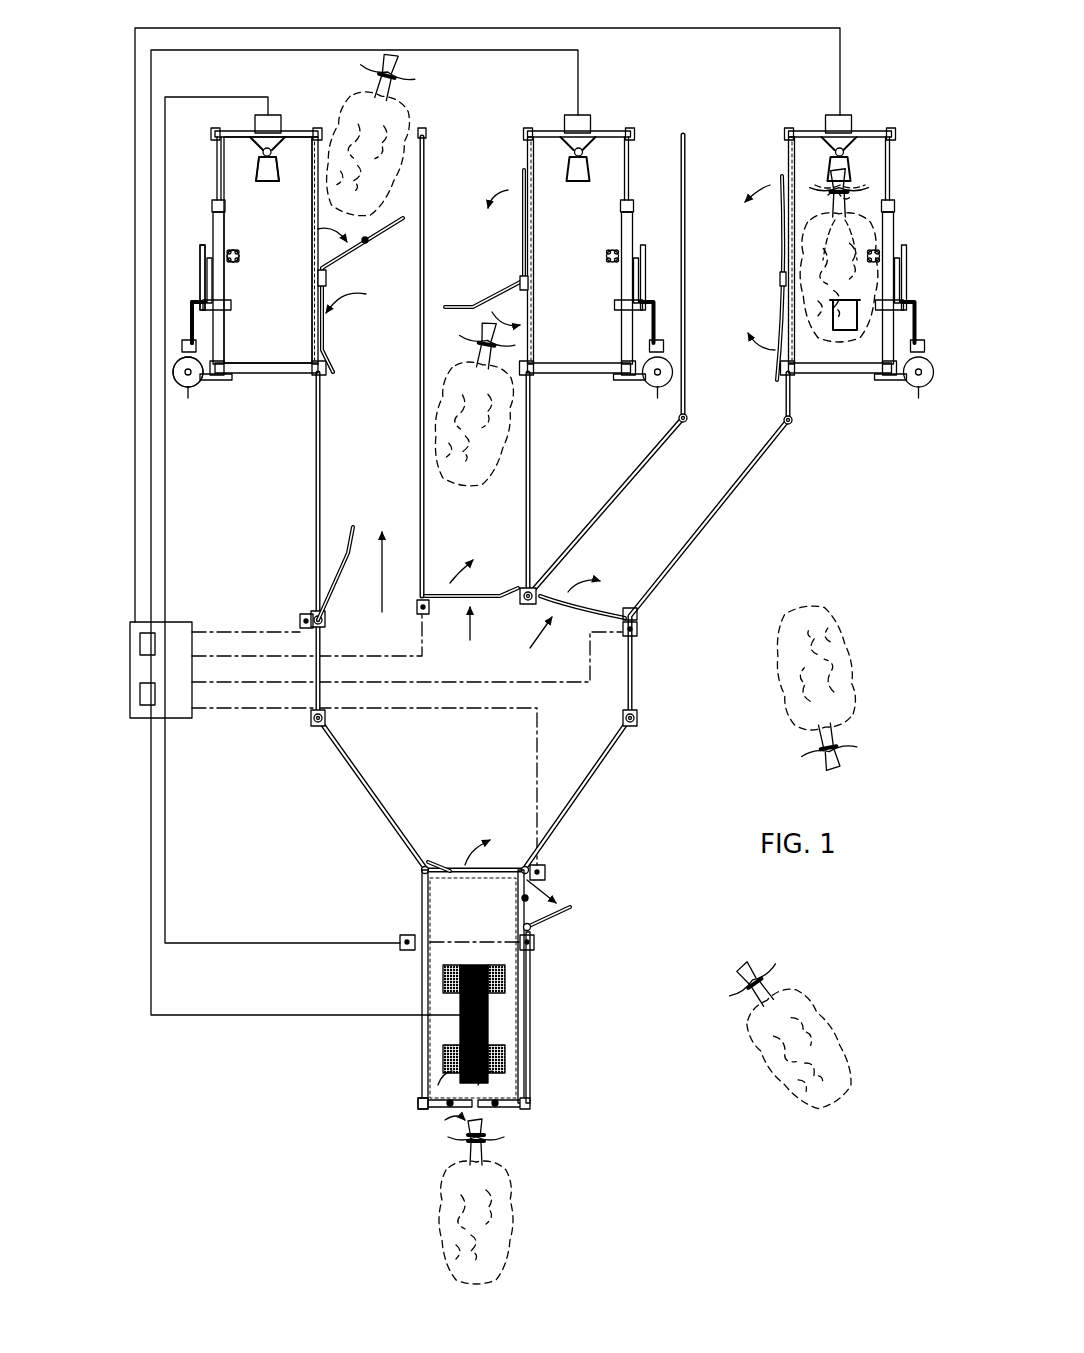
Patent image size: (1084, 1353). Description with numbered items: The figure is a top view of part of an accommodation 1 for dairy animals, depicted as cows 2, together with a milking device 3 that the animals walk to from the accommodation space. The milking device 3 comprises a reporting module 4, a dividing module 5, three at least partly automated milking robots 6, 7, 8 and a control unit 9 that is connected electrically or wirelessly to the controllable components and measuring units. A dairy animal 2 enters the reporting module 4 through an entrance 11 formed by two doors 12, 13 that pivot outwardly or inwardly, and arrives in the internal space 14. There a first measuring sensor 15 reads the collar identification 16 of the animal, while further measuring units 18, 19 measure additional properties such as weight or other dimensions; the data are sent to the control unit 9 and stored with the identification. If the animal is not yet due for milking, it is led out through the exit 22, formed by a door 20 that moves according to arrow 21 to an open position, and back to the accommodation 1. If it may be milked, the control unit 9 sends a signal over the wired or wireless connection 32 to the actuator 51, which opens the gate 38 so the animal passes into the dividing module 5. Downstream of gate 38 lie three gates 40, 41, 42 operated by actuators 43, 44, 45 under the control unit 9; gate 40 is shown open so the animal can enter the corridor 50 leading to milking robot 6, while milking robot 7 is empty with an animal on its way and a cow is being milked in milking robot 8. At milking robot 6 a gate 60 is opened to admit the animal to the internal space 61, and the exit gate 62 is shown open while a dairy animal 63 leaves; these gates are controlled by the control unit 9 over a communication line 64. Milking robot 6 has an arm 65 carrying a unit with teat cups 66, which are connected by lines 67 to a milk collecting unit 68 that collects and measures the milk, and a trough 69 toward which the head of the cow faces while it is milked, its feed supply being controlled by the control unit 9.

The accommodation for dairy animals 1 is at (787, 557).
The dairy animal 2 is at (822, 992).
The milking device 3 is at (250, 1062).
The reporting module 4 is at (534, 997).
The dividing module 5 is at (612, 764).
The milking robot 6 is at (262, 373).
The milking robot 7 is at (578, 373).
The milking robot 8 is at (840, 373).
The control unit 9 is at (127, 728).
The entrance 11 is at (442, 1112).
The door 12 is at (423, 1090).
The door 13 is at (497, 1104).
The internal space 14 is at (496, 1022).
The first measuring sensor 15 is at (534, 950).
The collar identification 16 is at (480, 1138).
The measuring unit 18 is at (408, 935).
The measuring sensor 19 is at (460, 1006).
The door 20 is at (535, 940).
The arrow 21 is at (572, 906).
The exit 22 is at (546, 895).
The wired or wireless connection 32 is at (362, 708).
The gate 38 is at (444, 866).
The gate 40 is at (396, 649).
The gate 41 is at (489, 678).
The gate 42 is at (570, 678).
The actuator 43 is at (306, 617).
The actuator 44 is at (425, 600).
The actuator 45 is at (637, 630).
The corridor 50 is at (386, 479).
The actuator 51 is at (542, 870).
The gate 60 is at (404, 316).
The internal space 61 is at (250, 193).
The exit gate 62 is at (365, 240).
The dairy animal 63 is at (424, 136).
The communication line 64 is at (215, 97).
The arm 65 is at (202, 275).
The teat cups 66 is at (233, 263).
The lines 67 is at (190, 318).
The milk collecting unit 68 is at (188, 372).
The trough 69 is at (263, 171).